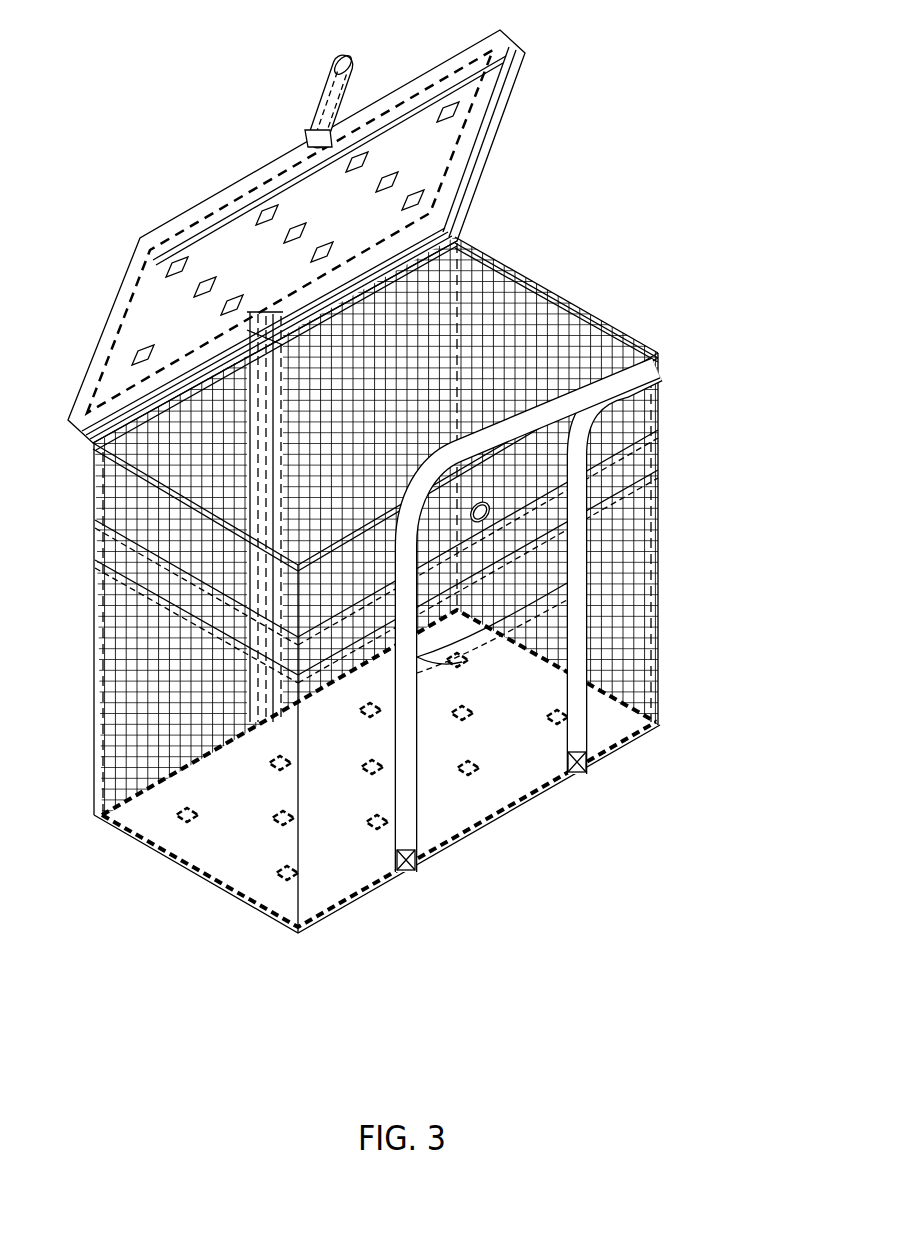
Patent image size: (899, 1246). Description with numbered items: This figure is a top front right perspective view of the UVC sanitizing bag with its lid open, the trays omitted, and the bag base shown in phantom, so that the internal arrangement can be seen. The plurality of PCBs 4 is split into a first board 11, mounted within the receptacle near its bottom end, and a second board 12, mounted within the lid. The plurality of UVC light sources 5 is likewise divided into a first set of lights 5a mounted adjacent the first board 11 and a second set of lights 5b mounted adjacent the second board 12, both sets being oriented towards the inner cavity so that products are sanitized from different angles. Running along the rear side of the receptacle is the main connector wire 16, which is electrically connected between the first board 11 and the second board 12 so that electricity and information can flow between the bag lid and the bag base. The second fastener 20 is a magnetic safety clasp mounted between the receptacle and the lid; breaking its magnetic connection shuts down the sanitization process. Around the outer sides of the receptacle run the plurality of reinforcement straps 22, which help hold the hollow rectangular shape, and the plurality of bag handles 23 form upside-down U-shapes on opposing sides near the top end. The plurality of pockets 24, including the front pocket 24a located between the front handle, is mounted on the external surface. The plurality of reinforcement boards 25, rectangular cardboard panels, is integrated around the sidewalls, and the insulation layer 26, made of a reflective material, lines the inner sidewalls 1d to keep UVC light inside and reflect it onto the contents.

The plurality of PCBs 4 is at (340, 492).
The first board 11 is at (217, 883).
The second board 12 is at (453, 170).
The plurality of UVC light sources 5 is at (439, 491).
The first set of lights 5a is at (478, 773).
The second set of lights 5b is at (450, 118).
The main connector wire 16 is at (262, 567).
The second fastener 20 is at (443, 439).
The plurality of reinforcement straps 22 is at (613, 459).
The plurality of bag handles 23 is at (612, 372).
The plurality of pockets 24 is at (440, 576).
The front pocket 24a is at (547, 620).
The plurality of reinforcement boards 25 is at (512, 335).
The insulation layer 26 is at (545, 278).
The inner sidewalls 1d is at (567, 302).